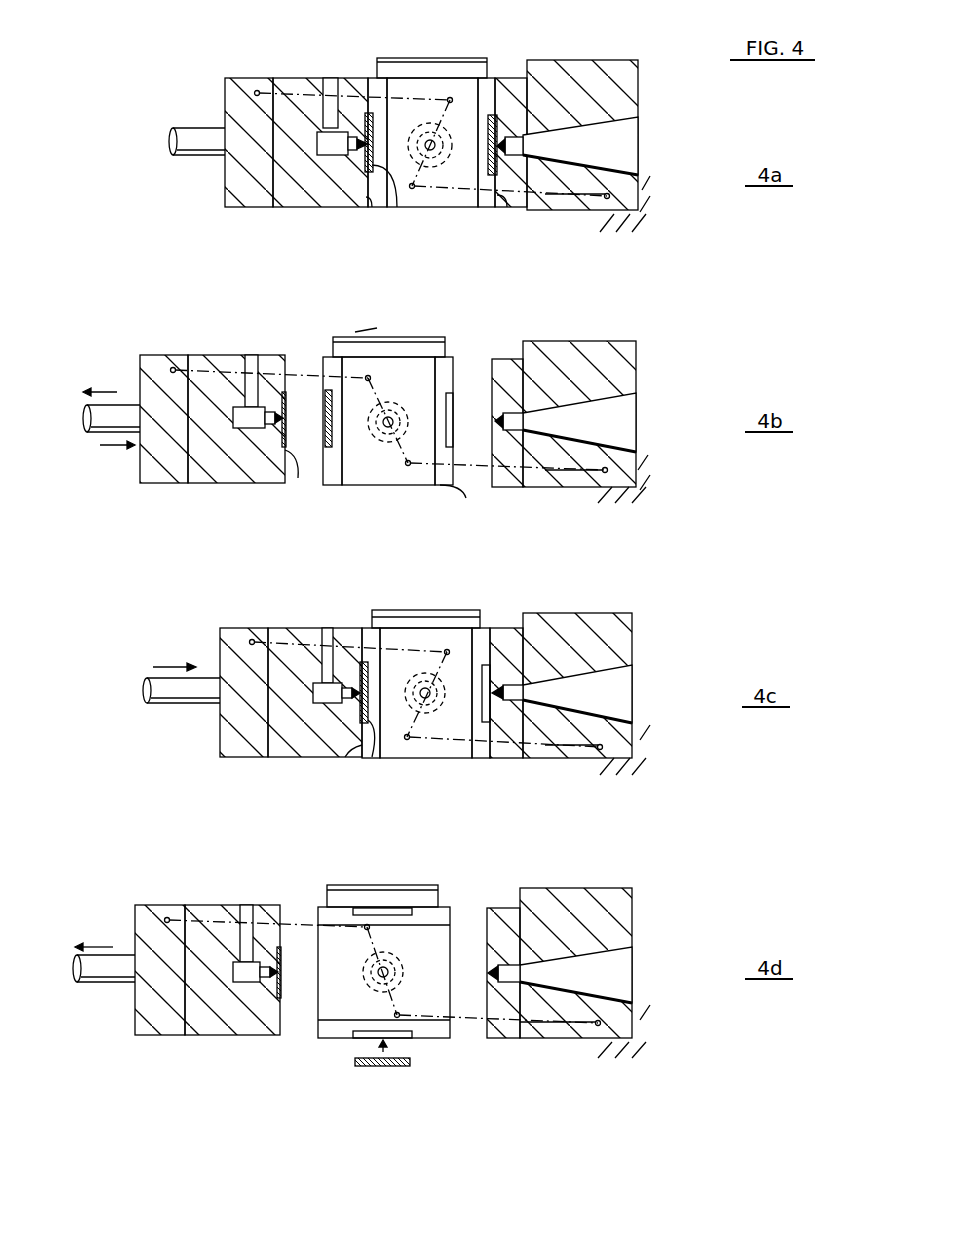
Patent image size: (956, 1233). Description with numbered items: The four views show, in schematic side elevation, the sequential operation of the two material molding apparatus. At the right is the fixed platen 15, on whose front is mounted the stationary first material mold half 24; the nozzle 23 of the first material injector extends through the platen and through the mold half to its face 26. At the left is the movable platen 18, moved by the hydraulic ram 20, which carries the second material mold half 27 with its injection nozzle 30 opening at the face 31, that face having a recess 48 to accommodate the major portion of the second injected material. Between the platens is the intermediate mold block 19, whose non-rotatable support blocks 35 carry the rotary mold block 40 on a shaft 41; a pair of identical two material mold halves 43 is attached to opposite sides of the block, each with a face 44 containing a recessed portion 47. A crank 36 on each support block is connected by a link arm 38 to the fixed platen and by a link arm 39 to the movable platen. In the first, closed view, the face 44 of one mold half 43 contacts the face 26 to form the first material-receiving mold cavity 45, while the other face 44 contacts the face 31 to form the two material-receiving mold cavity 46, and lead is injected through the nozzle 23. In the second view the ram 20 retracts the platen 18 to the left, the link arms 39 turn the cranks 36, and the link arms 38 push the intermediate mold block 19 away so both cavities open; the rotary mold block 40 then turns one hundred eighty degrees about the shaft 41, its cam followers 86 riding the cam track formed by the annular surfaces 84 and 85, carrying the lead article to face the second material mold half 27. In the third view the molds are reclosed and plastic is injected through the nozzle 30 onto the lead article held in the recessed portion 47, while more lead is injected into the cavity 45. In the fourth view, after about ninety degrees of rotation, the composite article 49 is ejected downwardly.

In FIG. 4a, the fixed platen 15 is at (621, 63).
In FIG. 4b, the fixed platen 15 is at (628, 366).
In FIG. 4c, the fixed platen 15 is at (626, 640).
In FIG. 4d, the fixed platen 15 is at (626, 905).
In FIG. 4a, the movable platen 18 is at (243, 78).
In FIG. 4b, the movable platen 18 is at (157, 478).
In FIG. 4c, the movable platen 18 is at (240, 750).
In FIG. 4d, the movable platen 18 is at (153, 905).
In FIG. 4a, the intermediate mold block 19 is at (416, 54).
In FIG. 4b, the intermediate mold block 19 is at (389, 330).
In FIG. 4c, the intermediate mold block 19 is at (403, 602).
In FIG. 4d, the intermediate mold block 19 is at (373, 876).
In FIG. 4a, the hydraulic ram 20 is at (193, 130).
In FIG. 4b, the hydraulic ram 20 is at (100, 434).
In FIG. 4c, the hydraulic ram 20 is at (172, 702).
In FIG. 4d, the hydraulic ram 20 is at (100, 983).
In FIG. 4a, the nozzle 23 is at (624, 131).
In FIG. 4b, the nozzle 23 is at (633, 445).
In FIG. 4c, the nozzle 23 is at (626, 708).
In FIG. 4d, the nozzle 23 is at (626, 998).
In FIG. 4a, the first material mold half 24 is at (513, 85).
In FIG. 4b, the first material mold half 24 is at (512, 362).
In FIG. 4c, the first material mold half 24 is at (511, 632).
In FIG. 4d, the first material mold half 24 is at (505, 910).
In FIG. 4b, the face 26 is at (492, 362).
In FIG. 4a, the second material mold half 27 is at (291, 78).
In FIG. 4b, the second material mold half 27 is at (218, 478).
In FIG. 4c, the second material mold half 27 is at (291, 752).
In FIG. 4d, the second material mold half 27 is at (208, 1032).
In FIG. 4a, the injection nozzle 30 is at (328, 147).
In FIG. 4b, the injection nozzle 30 is at (245, 426).
In FIG. 4c, the injection nozzle 30 is at (320, 703).
In FIG. 4d, the injection nozzle 30 is at (245, 976).
In FIG. 4a, the face 31 is at (371, 210).
In FIG. 4b, the face 31 is at (299, 477).
In FIG. 4a, the support blocks 35 is at (405, 72).
In FIG. 4d, the support blocks 35 is at (355, 900).
In FIG. 4a, the crank 36 is at (442, 120).
In FIG. 4b, the crank 36 is at (372, 392).
In FIG. 4c, the crank 36 is at (425, 684).
In FIG. 4d, the crank 36 is at (395, 1005).
In FIG. 4a, the link arm 38 is at (562, 195).
In FIG. 4b, the link arm 38 is at (550, 473).
In FIG. 4c, the link arm 38 is at (553, 748).
In FIG. 4d, the link arm 38 is at (540, 1024).
In FIG. 4a, the link arm 39 is at (308, 95).
In FIG. 4b, the link arm 39 is at (200, 370).
In FIG. 4c, the link arm 39 is at (286, 645).
In FIG. 4d, the link arm 39 is at (203, 920).
In FIG. 4a, the rotary mold block 40 is at (440, 78).
In FIG. 4b, the rotary mold block 40 is at (388, 357).
In FIG. 4c, the rotary mold block 40 is at (437, 628).
In FIG. 4d, the rotary mold block 40 is at (447, 930).
In FIG. 4a, the shaft 41 is at (434, 150).
In FIG. 4b, the shaft 41 is at (386, 428).
In FIG. 4c, the shaft 41 is at (426, 700).
In FIG. 4d, the shaft 41 is at (378, 972).
In FIG. 4a, the two material mold half 43 is at (372, 80).
In FIG. 4b, the two material mold half 43 is at (330, 350).
In FIG. 4c, the two material mold half 43 is at (367, 632).
In FIG. 4d, the two material mold half 43 is at (322, 906).
In FIG. 4a, the face 44 is at (507, 210).
In FIG. 4b, the face 44 is at (462, 501).
In FIG. 4c, the face 44 is at (349, 757).
In FIG. 4a, the first material-receiving mold cavity 45 is at (498, 120).
In FIG. 4b, the first material-receiving mold cavity 45 is at (324, 408).
In FIG. 4c, the first material-receiving mold cavity 45 is at (358, 705).
In FIG. 4d, the first material-receiving mold cavity 45 is at (405, 1038).
In FIG. 4a, the two material-receiving mold cavity 46 is at (397, 208).
In FIG. 4b, the two material-receiving mold cavity 46 is at (452, 400).
In FIG. 4c, the two material-receiving mold cavity 46 is at (485, 723).
In FIG. 4d, the two material-receiving mold cavity 46 is at (398, 912).
In FIG. 4c, the recessed portion 47 is at (373, 759).
In FIG. 4a, the recess 48 is at (368, 168).
In FIG. 4b, the recess 48 is at (286, 430).
In FIG. 4d, the recess 48 is at (281, 957).
In FIG. 4d, the composite article 49 is at (395, 1068).
In FIG. 4b, the outer surface 84 is at (375, 415).
In FIG. 4b, the inner surface 85 is at (392, 448).
In FIG. 4b, the cam follower 86 is at (402, 418).
In FIG. 4d, the cam follower 86 is at (397, 962).